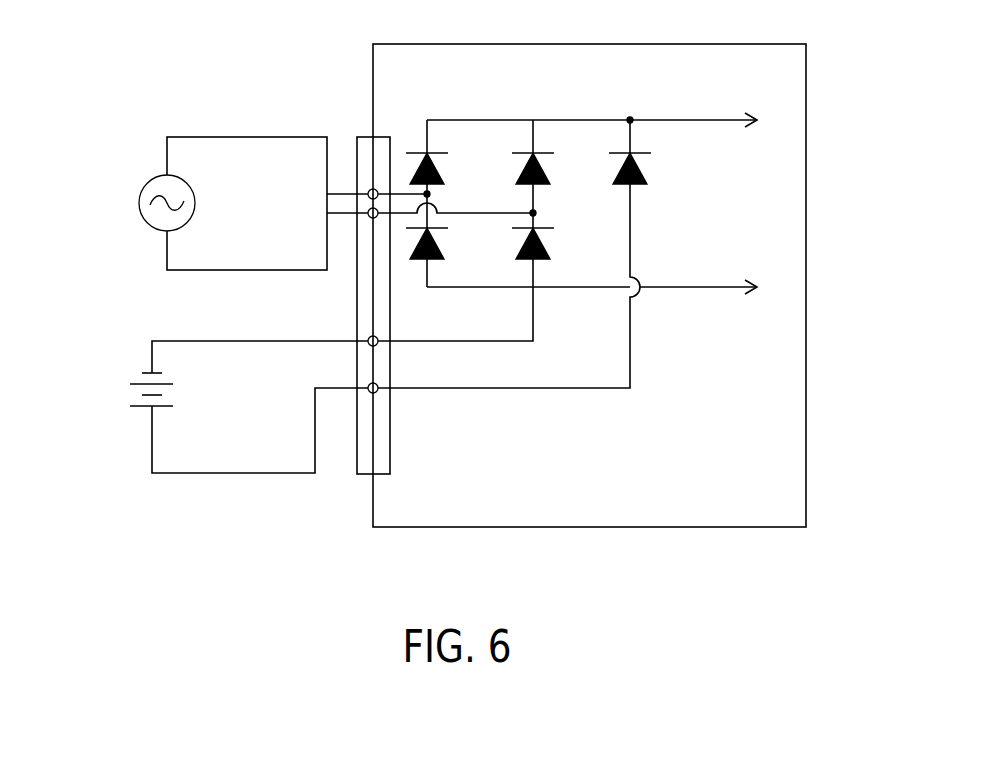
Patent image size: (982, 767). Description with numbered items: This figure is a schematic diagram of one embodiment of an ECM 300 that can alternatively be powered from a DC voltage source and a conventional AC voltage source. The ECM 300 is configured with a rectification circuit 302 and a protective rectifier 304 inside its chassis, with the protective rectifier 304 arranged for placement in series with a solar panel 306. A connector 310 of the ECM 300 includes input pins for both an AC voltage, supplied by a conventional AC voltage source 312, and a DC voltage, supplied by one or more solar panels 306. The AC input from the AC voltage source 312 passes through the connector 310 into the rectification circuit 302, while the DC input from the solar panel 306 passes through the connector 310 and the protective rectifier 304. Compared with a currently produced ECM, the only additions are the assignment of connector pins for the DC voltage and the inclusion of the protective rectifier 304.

The ECM 300 is at (806, 207).
The rectification circuit 302 is at (567, 220).
The protective rectifier 304 is at (643, 174).
The solar panel 306 is at (132, 362).
The connector 310 is at (366, 137).
The AC voltage source 312 is at (145, 183).